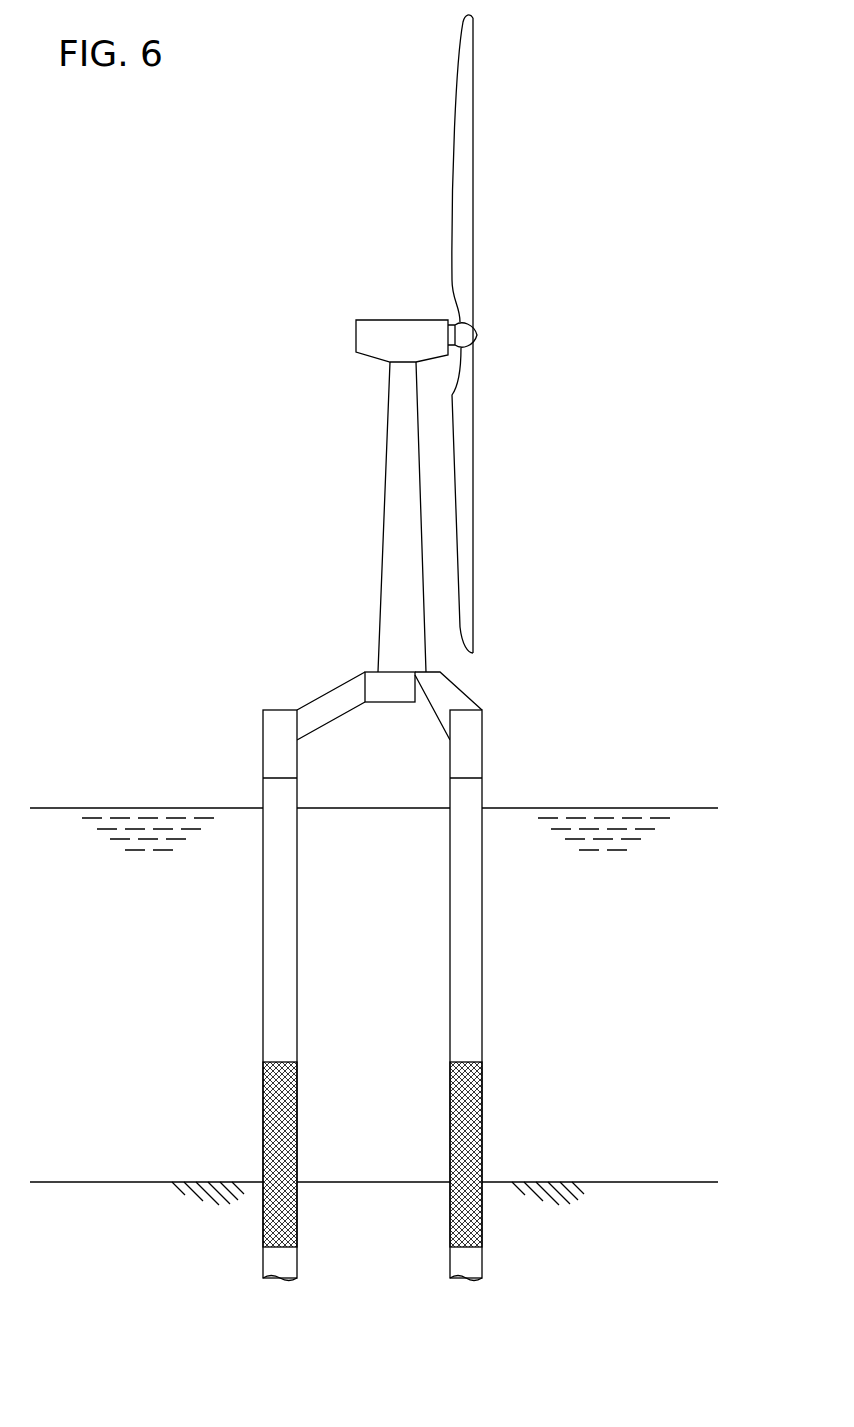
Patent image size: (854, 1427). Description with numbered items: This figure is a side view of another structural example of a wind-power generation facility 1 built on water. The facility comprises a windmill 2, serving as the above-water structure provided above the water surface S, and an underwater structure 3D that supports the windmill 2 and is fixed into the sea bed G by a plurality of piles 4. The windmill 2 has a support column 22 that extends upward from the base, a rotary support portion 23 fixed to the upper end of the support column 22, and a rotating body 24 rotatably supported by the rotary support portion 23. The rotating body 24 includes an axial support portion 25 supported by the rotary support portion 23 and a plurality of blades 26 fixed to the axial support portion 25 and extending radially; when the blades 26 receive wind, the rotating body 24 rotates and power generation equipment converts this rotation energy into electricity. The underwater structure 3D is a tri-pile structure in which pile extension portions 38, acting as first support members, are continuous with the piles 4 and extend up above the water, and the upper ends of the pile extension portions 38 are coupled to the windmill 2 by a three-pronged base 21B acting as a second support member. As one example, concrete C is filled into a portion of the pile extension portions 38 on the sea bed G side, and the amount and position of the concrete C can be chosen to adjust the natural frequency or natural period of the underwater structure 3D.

The wind-power generation facility 1 is at (648, 312).
The windmill 2 is at (310, 370).
The support column 22 is at (384, 537).
The rotary support portion 23 is at (392, 320).
The rotating body 24 is at (515, 289).
The axial support portion 25 is at (478, 333).
The blade 26 is at (466, 182).
The three-pronged base 21B is at (315, 652).
The underwater structure 3D is at (237, 883).
The pile extension portion 38 is at (272, 960).
The concrete C is at (264, 1113).
The water surface S is at (655, 808).
The sea bed G is at (655, 1182).
The pile 4 is at (225, 1230).